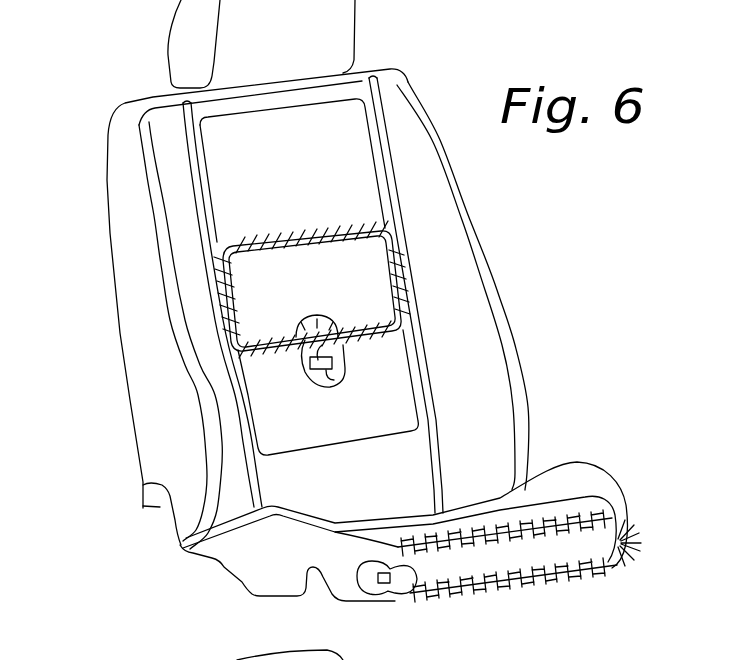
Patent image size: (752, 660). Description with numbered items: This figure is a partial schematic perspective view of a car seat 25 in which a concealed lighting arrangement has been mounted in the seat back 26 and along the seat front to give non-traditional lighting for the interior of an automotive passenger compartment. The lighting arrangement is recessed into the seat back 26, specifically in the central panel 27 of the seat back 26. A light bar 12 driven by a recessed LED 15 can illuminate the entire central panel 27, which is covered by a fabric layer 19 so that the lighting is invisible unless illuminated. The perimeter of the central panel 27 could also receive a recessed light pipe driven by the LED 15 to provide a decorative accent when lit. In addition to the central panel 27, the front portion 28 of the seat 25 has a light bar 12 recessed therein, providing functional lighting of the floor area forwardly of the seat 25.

The light bar 12 is at (367, 270).
The recessed LED 15 is at (300, 358).
The fabric layer 19 is at (383, 318).
The car seat 25 is at (374, 72).
The seat back 26 is at (170, 170).
The central panel 27 is at (250, 288).
The front portion 28 is at (627, 533).